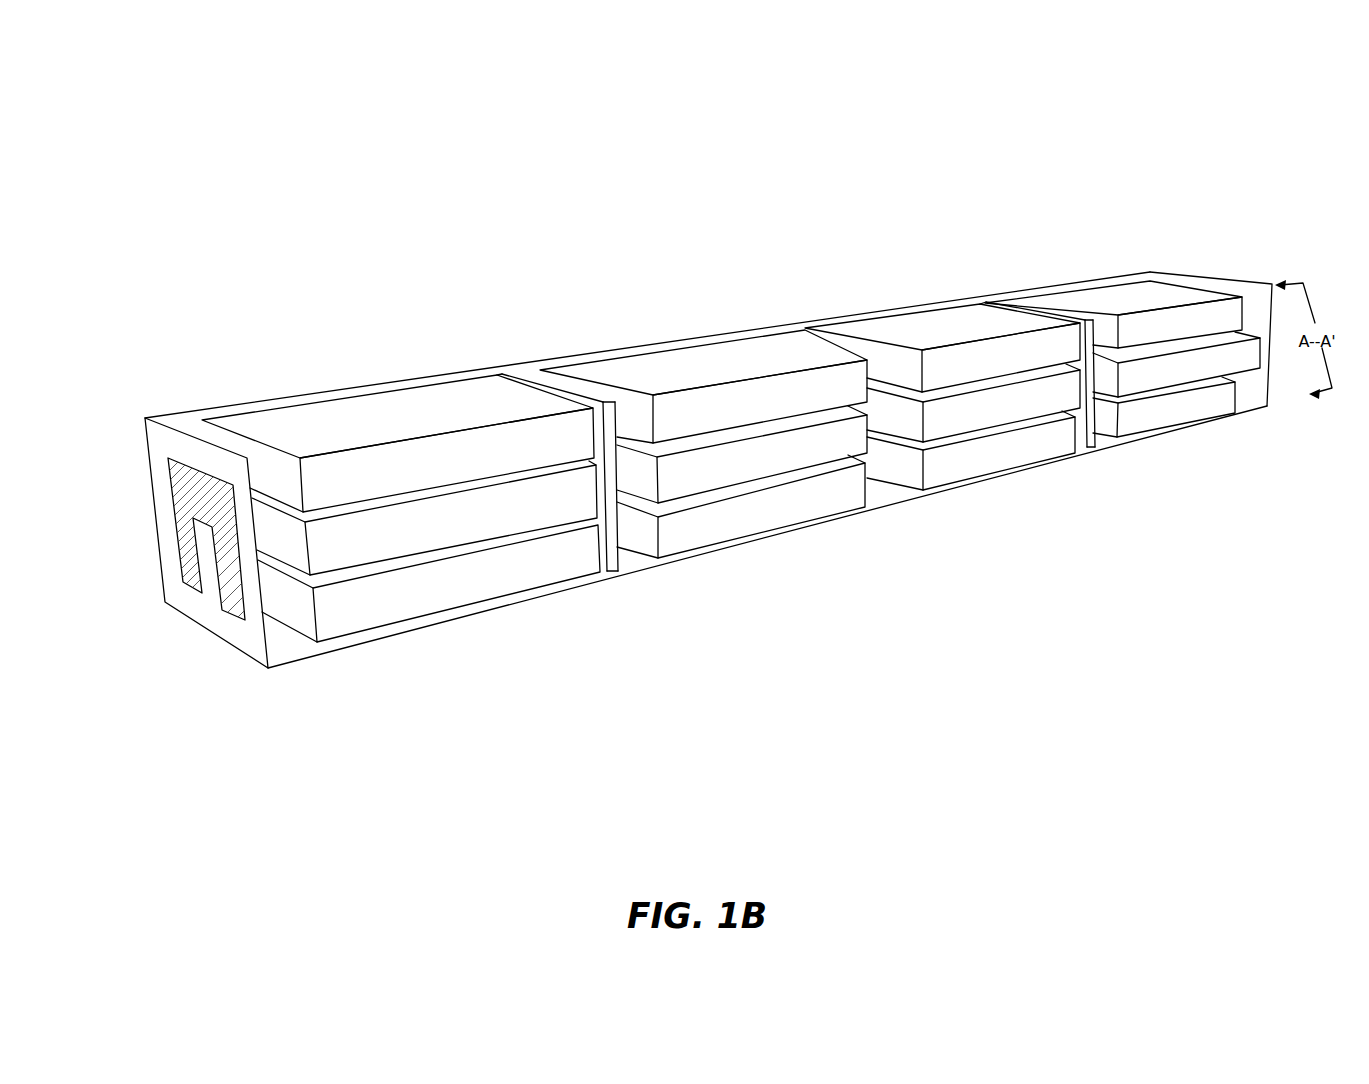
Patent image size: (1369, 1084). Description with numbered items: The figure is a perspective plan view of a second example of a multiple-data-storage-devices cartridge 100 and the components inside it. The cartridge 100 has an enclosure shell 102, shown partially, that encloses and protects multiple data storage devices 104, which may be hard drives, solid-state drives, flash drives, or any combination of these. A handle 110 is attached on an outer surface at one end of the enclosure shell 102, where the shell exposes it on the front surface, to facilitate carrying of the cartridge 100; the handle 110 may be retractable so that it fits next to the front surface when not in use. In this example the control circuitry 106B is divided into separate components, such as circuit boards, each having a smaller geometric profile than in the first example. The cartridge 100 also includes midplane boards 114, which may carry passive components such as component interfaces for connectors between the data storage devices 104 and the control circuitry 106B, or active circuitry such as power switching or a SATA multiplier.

The multiple-data-storage-devices cartridge 100 is at (165, 94).
The enclosure shell 102 is at (229, 637).
The data storage devices 104 is at (1087, 300).
The control circuitry 106B is at (1172, 378).
The handle 110 is at (172, 512).
The midplane boards 114 is at (613, 560).